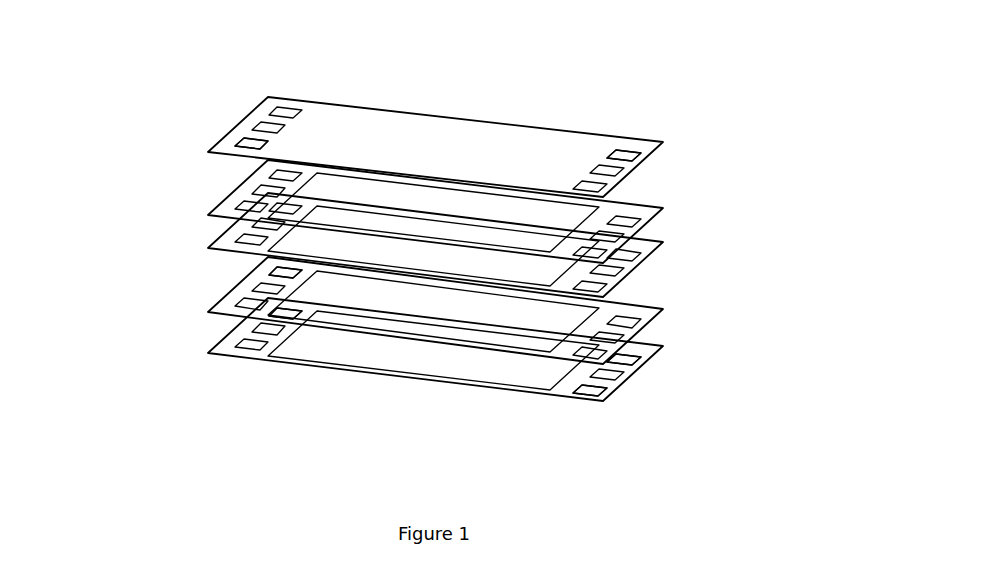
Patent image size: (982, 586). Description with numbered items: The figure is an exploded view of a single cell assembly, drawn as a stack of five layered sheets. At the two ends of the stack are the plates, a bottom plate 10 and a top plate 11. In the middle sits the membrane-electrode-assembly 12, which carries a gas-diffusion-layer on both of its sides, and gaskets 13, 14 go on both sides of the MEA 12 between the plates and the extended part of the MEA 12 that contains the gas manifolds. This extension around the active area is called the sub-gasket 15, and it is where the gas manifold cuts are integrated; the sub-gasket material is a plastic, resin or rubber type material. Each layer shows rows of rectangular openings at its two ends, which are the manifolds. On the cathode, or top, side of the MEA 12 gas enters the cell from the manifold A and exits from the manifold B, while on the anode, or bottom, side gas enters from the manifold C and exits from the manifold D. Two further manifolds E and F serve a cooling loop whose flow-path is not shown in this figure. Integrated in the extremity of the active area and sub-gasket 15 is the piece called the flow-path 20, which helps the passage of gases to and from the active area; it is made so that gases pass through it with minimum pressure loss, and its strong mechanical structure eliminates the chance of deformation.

The bottom plate 10 is at (391, 396).
The top plate 11 is at (518, 135).
The membrane-electrode-assembly 12 is at (214, 233).
The gasket 13 is at (652, 210).
The gasket 14 is at (537, 355).
The sub-gasket 15 is at (640, 267).
The flow-path 20 is at (305, 168).
The manifold A is at (638, 149).
The manifold B is at (237, 148).
The manifold C is at (590, 390).
The manifold D is at (290, 318).
The manifold E is at (263, 285).
The manifold F is at (612, 343).